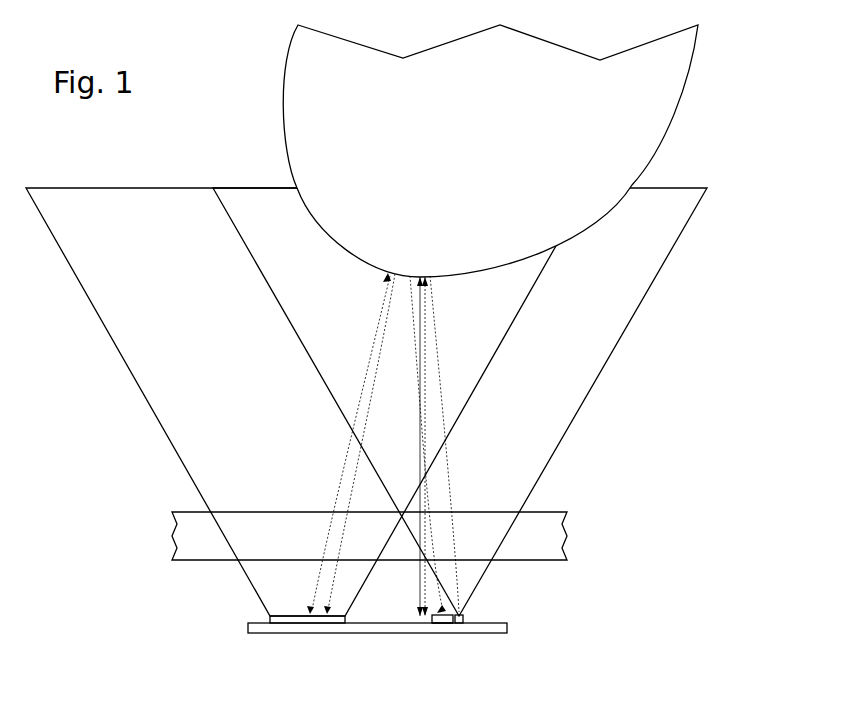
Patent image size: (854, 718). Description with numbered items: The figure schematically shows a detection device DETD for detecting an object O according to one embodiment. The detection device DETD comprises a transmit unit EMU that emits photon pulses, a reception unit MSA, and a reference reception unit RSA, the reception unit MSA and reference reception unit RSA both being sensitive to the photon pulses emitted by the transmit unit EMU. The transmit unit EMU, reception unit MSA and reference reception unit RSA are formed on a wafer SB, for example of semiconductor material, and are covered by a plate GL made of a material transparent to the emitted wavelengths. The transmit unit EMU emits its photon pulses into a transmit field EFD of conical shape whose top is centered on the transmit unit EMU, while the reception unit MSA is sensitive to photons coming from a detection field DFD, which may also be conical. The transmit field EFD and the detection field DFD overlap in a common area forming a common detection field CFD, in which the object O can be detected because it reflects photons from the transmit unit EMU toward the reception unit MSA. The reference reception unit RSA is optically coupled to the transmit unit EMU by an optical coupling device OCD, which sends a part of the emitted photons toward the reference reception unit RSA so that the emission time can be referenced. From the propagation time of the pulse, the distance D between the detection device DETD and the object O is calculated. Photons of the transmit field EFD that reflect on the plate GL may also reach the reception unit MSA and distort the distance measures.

The object O is at (665, 110).
The common detection field CFD is at (243, 188).
The transmit field EFD is at (622, 330).
The detection field DFD is at (143, 392).
The distance D is at (428, 446).
The plate GL is at (555, 522).
The reception unit MSA is at (268, 617).
The optical coupling device OCD is at (432, 614).
The transmit unit EMU is at (463, 617).
The wafer SB is at (510, 622).
The reference reception unit RSA is at (440, 625).
The detection device DETD is at (222, 619).